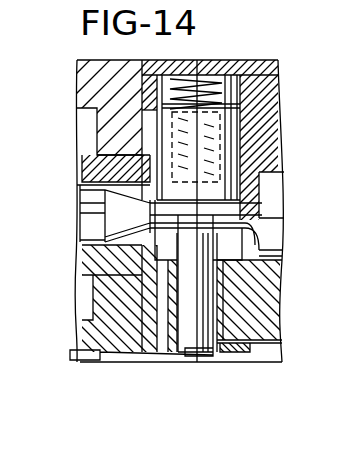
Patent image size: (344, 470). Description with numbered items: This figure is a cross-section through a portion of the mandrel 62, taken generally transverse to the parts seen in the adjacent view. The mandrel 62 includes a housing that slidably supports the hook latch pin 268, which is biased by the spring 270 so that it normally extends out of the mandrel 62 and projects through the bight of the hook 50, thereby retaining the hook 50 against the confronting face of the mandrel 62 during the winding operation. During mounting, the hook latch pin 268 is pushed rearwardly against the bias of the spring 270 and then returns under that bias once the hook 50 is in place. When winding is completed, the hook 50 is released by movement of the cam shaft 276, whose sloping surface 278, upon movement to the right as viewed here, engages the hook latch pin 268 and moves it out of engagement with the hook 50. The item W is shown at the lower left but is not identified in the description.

The mandrel 62 is at (76, 66).
The spring 270 is at (204, 76).
The cam shaft 276 is at (270, 187).
The sloping surface 278 is at (113, 206).
The hook latch pin 268 is at (192, 342).
The hook 50 is at (246, 348).
The wall plate W is at (92, 362).